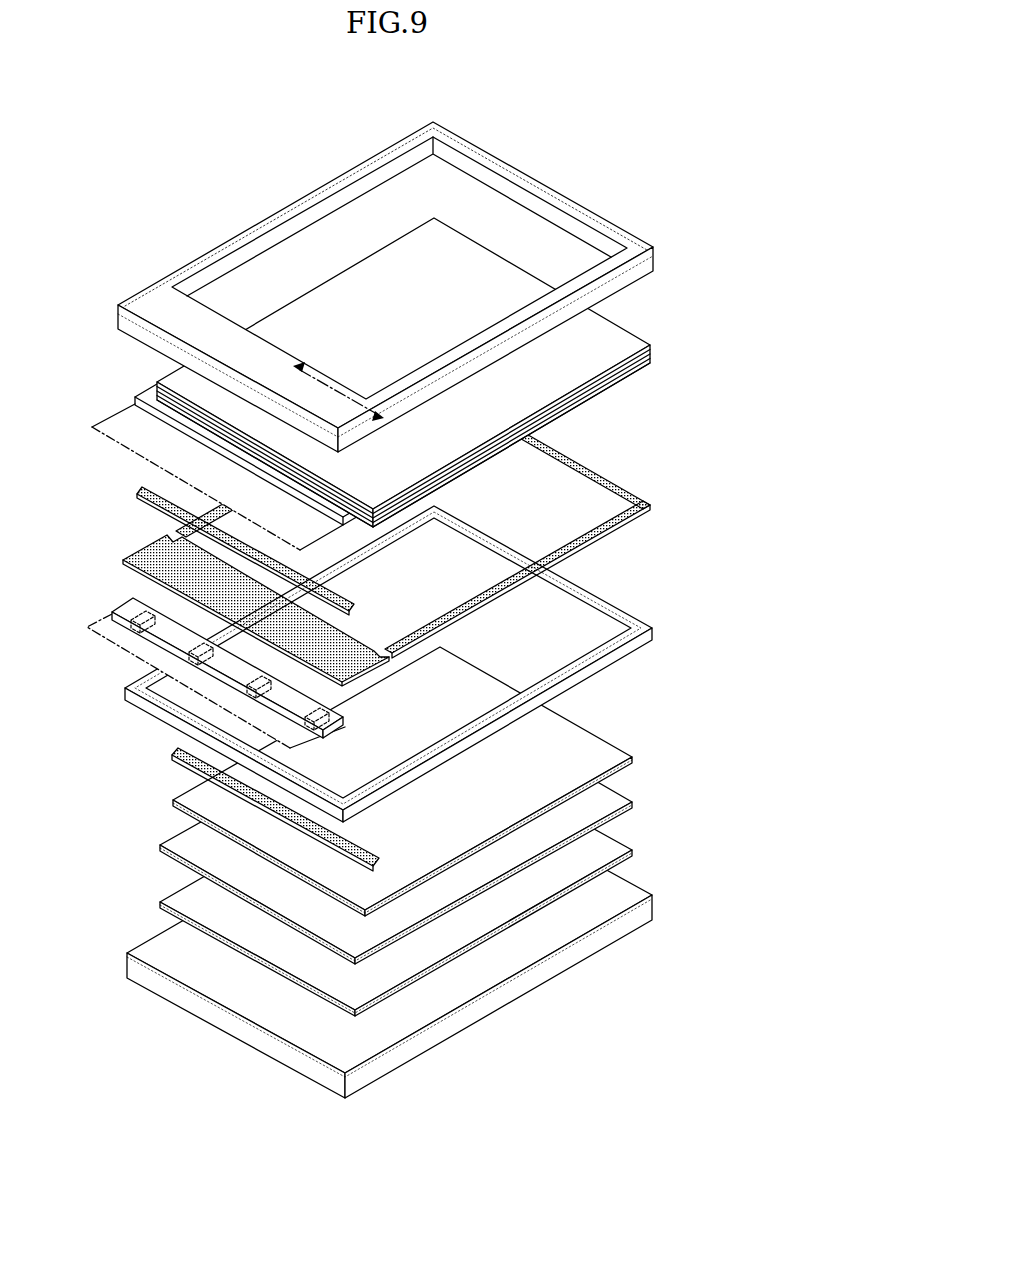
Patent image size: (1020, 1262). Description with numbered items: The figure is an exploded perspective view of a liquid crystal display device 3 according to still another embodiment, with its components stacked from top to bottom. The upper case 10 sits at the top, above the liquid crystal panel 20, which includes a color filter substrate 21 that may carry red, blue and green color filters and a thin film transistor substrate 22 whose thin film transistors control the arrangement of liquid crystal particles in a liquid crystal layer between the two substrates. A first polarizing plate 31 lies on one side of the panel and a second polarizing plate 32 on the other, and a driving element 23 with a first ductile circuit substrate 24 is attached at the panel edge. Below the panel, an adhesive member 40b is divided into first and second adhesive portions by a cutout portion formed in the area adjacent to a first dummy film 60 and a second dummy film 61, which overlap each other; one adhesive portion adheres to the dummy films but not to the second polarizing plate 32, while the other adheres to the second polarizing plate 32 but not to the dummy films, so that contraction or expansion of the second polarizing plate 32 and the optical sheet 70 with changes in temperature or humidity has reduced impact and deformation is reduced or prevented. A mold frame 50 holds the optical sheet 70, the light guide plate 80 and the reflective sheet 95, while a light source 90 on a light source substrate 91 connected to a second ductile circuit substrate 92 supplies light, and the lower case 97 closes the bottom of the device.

The liquid crystal display device 3 is at (527, 99).
The upper case 10 is at (551, 196).
The liquid crystal panel 20 is at (443, 372).
The color filter substrate 21 is at (654, 351).
The thin film transistor substrate 22 is at (654, 359).
The driving element 23 is at (135, 396).
The first ductile circuit substrate 24 is at (117, 418).
The first polarizing plate 31 is at (625, 331).
The second polarizing plate 32 is at (650, 366).
The adhesive member 40b is at (648, 502).
The mold frame 50 is at (630, 623).
The first dummy film 60 is at (173, 752).
The second dummy film 61 is at (137, 490).
The optical sheet 70 is at (601, 747).
The light guide plate 80 is at (612, 799).
The light source 90 is at (110, 613).
The light source substrate 91 is at (128, 612).
The second ductile circuit substrate 92 is at (122, 648).
The reflective sheet 95 is at (612, 847).
The lower case 97 is at (655, 910).